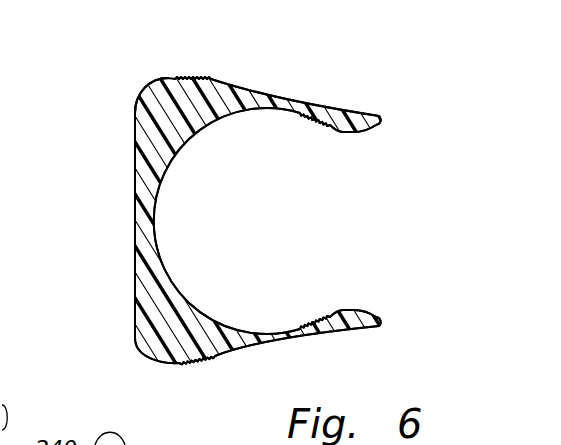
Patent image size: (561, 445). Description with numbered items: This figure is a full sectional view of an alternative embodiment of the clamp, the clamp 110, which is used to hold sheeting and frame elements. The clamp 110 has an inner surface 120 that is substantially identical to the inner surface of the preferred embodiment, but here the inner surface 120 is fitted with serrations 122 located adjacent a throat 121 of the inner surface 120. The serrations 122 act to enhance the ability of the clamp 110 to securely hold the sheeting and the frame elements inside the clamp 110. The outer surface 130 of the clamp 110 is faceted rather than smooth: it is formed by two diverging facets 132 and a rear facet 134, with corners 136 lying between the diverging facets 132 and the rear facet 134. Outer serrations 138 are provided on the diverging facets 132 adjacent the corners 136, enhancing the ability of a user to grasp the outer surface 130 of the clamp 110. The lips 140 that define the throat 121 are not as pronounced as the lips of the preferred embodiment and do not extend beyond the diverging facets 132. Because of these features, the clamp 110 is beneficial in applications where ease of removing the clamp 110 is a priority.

The clamp 110 is at (368, 56).
The inner surface 120 is at (166, 162).
The throat 121 is at (351, 133).
The serrations 122 is at (312, 124).
The outer surface 130 is at (134, 112).
The diverging facets 132 is at (288, 98).
The rear facet 134 is at (134, 170).
The corners 136 is at (146, 80).
The outer serrations 138 is at (198, 78).
The lips 140 is at (380, 117).